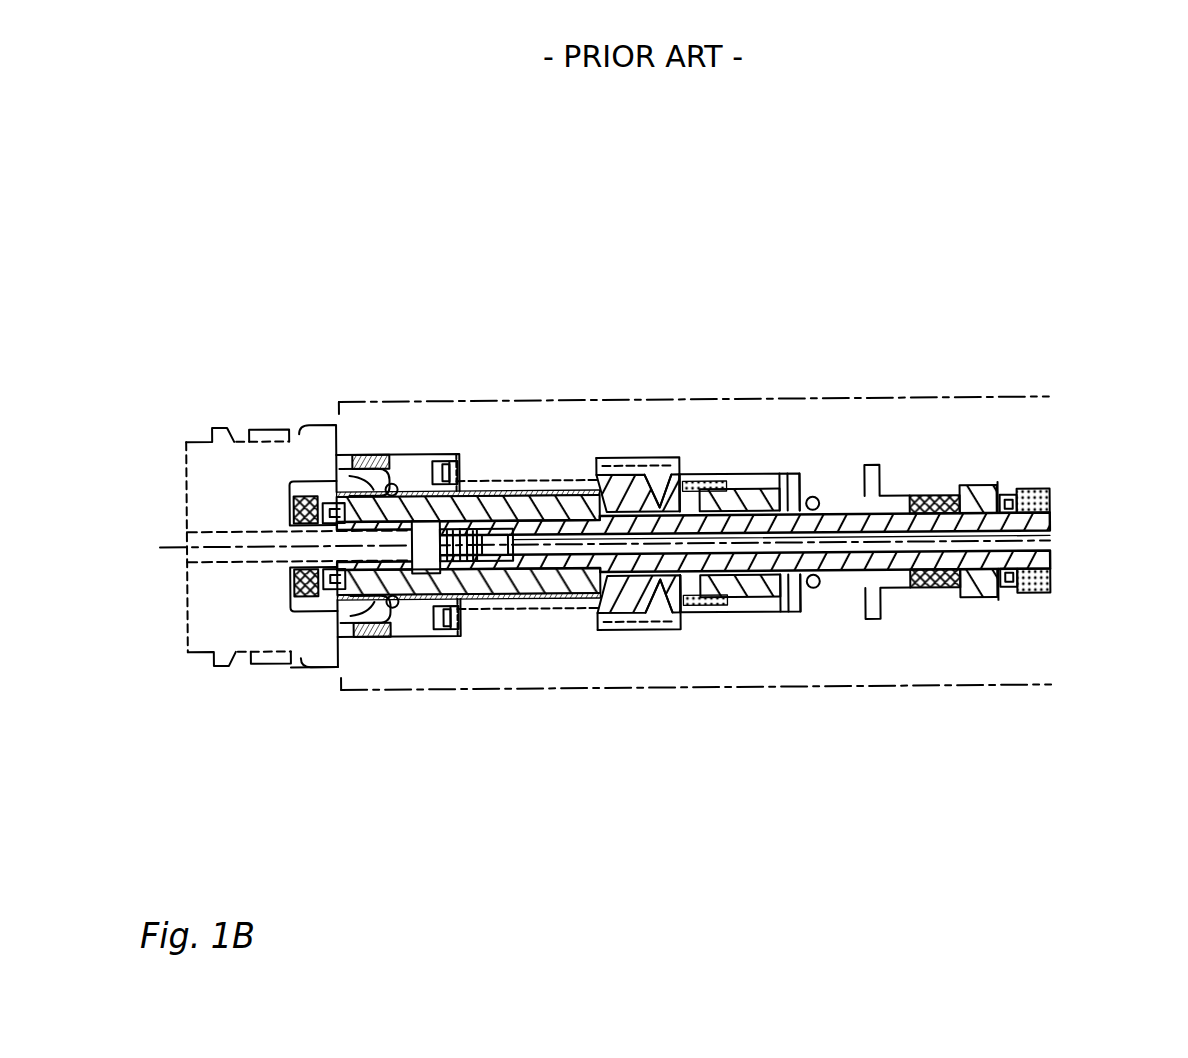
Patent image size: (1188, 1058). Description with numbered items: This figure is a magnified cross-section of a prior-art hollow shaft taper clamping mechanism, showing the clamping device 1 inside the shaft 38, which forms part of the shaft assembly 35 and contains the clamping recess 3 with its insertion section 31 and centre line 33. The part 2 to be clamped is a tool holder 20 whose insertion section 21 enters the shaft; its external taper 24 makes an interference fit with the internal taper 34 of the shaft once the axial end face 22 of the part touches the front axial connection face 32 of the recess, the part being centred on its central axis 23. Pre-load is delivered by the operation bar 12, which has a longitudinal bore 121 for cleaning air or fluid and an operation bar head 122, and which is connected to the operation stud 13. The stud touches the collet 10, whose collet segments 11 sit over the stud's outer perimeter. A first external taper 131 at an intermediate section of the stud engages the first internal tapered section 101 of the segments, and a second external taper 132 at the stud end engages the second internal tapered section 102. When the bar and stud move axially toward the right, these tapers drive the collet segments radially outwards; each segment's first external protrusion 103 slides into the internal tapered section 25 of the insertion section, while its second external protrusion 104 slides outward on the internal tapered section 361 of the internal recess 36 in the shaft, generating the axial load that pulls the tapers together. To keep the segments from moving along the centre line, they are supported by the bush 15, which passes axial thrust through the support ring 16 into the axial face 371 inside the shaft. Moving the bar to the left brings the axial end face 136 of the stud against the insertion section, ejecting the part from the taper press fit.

The clamping device 1 is at (543, 610).
The part that is to be clamped 2 is at (199, 437).
The clamping recess 3 is at (442, 636).
The collet 10 is at (580, 605).
The collet segment 11 is at (500, 492).
The operation bar 12 is at (838, 516).
The operation stud 13 is at (530, 512).
The bush with tapered end 15 is at (672, 478).
The support ring 16 is at (792, 498).
The tool holder 20 is at (302, 420).
The insertion section 21 is at (420, 630).
The axial end face of the part to be clamped 22 is at (320, 496).
The central axis of the part that is to be clamped 23 is at (168, 556).
The external taper 24 is at (420, 460).
The internal tapered section 25 is at (398, 485).
The insertion section for the part to be clamped 31 is at (347, 673).
The front axial connection face of the clamping recess 32 is at (352, 478).
The centre line of the clamping recess 33 is at (998, 533).
The internal taper in the shaft 34 is at (448, 462).
The shaft assembly 35 is at (947, 697).
The internal recess in an inner peripheral area of the clamping recess 36 is at (620, 458).
The shaft 38 is at (957, 412).
The first internal tapered section of the collet 101 is at (390, 632).
The second internal tapered section of the collet 102 is at (637, 602).
The first external protrusion of the collet 103 is at (380, 455).
The second external protrusion of the collet 104 is at (630, 475).
The longitudinal bore in the operation bar 121 is at (1048, 544).
The operation bar head 122 is at (466, 490).
The first external taper of the operation stud 131 is at (372, 636).
The second external taper of the operation stud 132 is at (594, 602).
The axial end face of the operation stud 136 is at (333, 672).
The internal tapered section of the clamping recess 361 is at (596, 460).
The axial face inside the shaft 371 is at (808, 598).